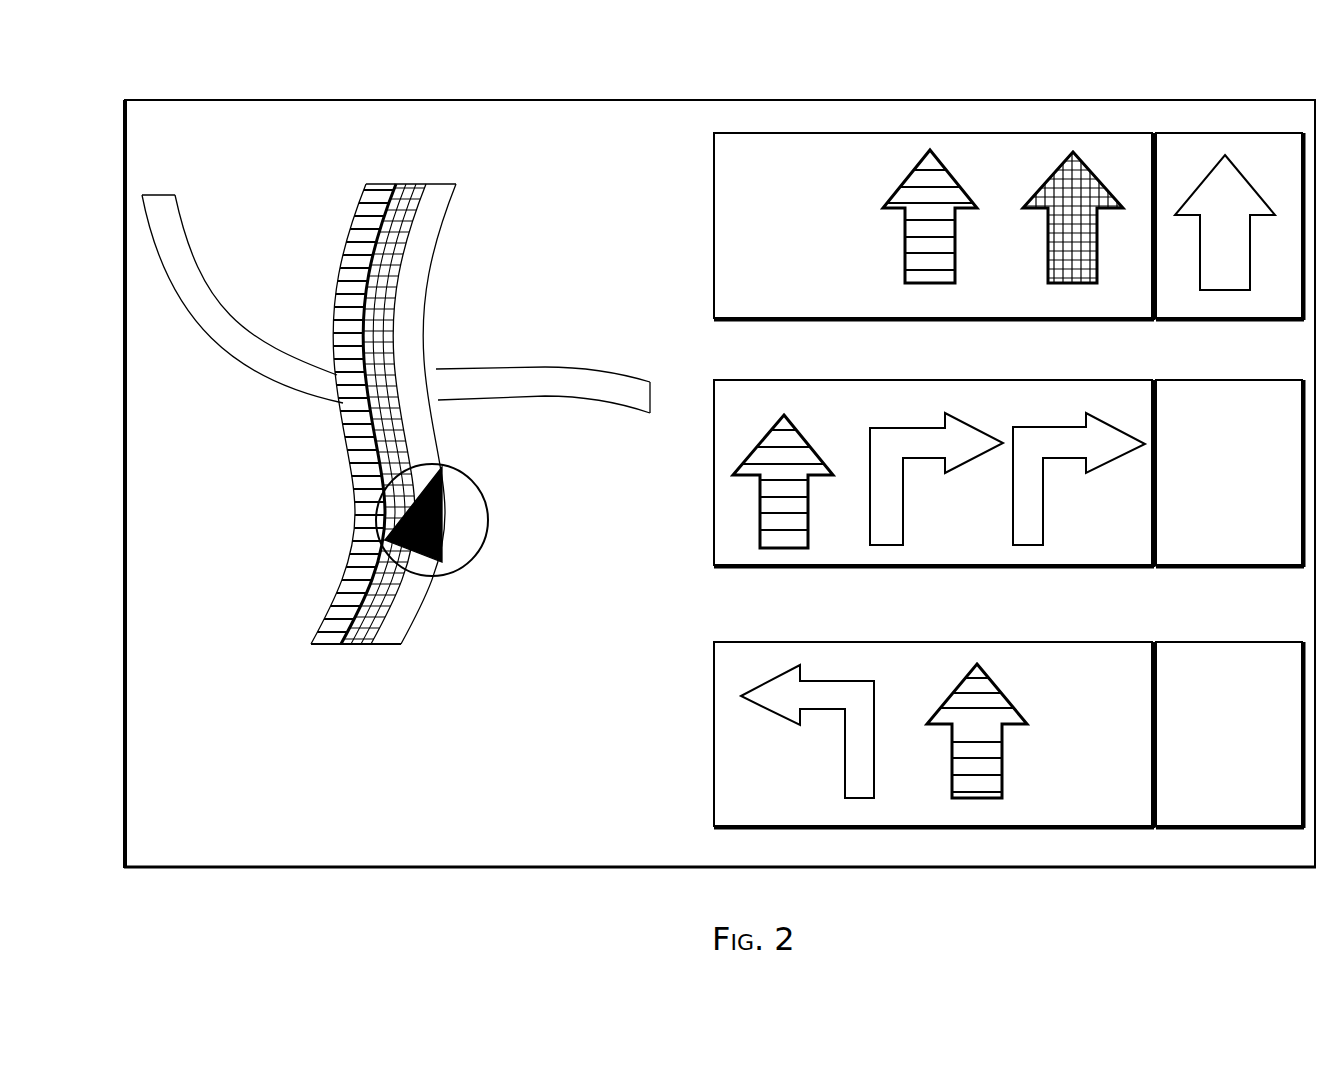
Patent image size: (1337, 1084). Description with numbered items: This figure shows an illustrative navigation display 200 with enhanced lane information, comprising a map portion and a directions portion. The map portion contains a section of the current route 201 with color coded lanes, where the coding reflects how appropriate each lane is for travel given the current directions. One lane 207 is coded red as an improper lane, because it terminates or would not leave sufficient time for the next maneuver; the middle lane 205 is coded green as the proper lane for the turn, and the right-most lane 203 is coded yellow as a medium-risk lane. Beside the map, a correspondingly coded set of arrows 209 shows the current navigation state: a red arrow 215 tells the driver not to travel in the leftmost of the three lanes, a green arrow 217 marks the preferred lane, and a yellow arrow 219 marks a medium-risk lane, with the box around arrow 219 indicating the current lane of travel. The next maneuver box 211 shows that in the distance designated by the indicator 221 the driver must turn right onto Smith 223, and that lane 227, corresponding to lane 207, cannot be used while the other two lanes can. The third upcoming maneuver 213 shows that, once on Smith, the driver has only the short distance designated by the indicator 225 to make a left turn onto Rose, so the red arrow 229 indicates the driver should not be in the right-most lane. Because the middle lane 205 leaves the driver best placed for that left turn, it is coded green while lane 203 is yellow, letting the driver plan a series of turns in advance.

The display 200 is at (249, 84).
The current route 201 is at (440, 240).
The yellow lane 203 is at (397, 617).
The green lane 205 is at (360, 647).
The red lane 207 is at (352, 585).
The set of arrows 209 is at (713, 215).
The maneuver box 211 is at (713, 475).
The third upcoming maneuver 213 is at (713, 737).
The red arrow 215 is at (913, 247).
The green arrow 217 is at (1058, 250).
The yellow arrow 219 is at (1223, 273).
The distance designator 221 is at (920, 340).
The Smith maneuver instruction 223 is at (1270, 533).
The distance designator 225 is at (1060, 595).
The lane arrow 227 is at (770, 503).
The red arrow 229 is at (990, 772).